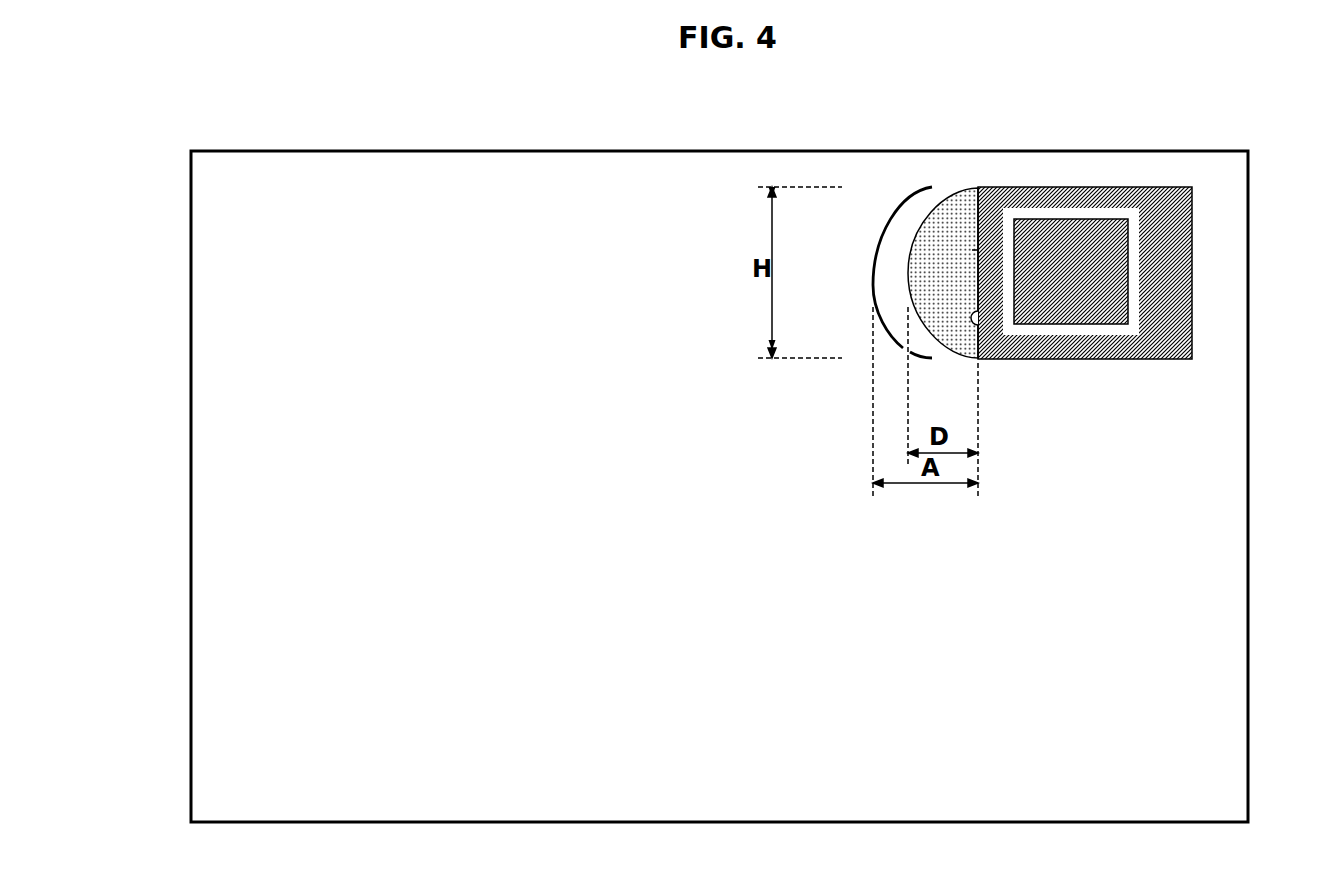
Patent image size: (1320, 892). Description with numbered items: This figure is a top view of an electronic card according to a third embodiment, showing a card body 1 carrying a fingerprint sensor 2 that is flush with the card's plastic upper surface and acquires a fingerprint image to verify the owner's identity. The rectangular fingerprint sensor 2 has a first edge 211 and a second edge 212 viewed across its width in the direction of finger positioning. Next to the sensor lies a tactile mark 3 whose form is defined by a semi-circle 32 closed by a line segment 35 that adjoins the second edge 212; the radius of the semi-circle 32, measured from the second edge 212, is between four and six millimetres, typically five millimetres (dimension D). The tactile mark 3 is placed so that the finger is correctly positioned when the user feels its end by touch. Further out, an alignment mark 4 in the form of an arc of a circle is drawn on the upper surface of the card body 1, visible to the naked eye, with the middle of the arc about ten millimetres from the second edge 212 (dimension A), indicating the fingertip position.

The card body 1 is at (182, 492).
The fingerprint sensor 2 is at (1085, 162).
The first edge 211 is at (1190, 223).
The second edge 212 is at (976, 322).
The tactile mark 3 is at (925, 273).
The semi-circle 32 is at (932, 208).
The line segment 35 is at (972, 250).
The alignment mark 4 is at (870, 230).